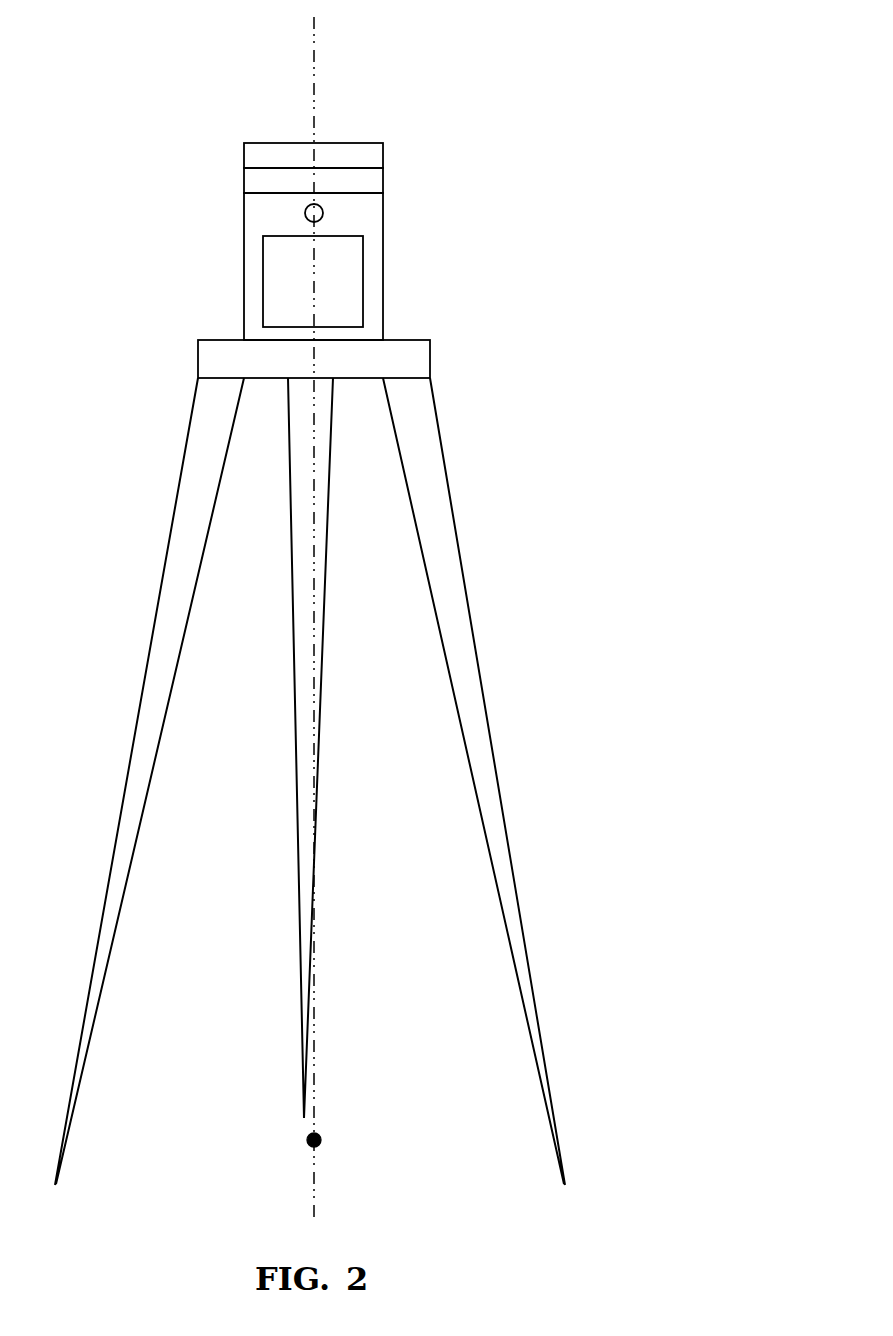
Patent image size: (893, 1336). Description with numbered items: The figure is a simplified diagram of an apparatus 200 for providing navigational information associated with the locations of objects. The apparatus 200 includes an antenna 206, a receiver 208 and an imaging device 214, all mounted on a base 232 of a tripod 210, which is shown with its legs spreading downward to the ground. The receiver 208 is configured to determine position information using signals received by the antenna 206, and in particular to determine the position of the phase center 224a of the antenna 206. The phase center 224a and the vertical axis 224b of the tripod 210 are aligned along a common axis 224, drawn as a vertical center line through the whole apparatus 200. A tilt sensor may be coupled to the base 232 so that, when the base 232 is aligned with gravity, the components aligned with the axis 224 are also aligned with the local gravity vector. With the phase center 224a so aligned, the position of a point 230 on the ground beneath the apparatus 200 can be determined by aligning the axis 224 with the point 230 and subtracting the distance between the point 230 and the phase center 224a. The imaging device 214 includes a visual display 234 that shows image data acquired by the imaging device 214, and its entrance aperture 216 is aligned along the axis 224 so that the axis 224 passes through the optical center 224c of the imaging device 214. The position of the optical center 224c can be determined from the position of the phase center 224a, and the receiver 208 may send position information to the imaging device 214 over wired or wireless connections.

The apparatus 200 is at (380, 88).
The antenna 206 is at (244, 155).
The receiver 208 is at (383, 177).
The tripod 210 is at (448, 488).
The imaging device 214 is at (244, 242).
The entrance aperture 216 is at (305, 213).
The axis 224 is at (313, 55).
The phase center 224a is at (314, 153).
The vertical axis 224b is at (314, 361).
The optical center 224c is at (323, 213).
The point 230 is at (320, 1137).
The base 232 is at (198, 357).
The visual display 234 is at (263, 297).